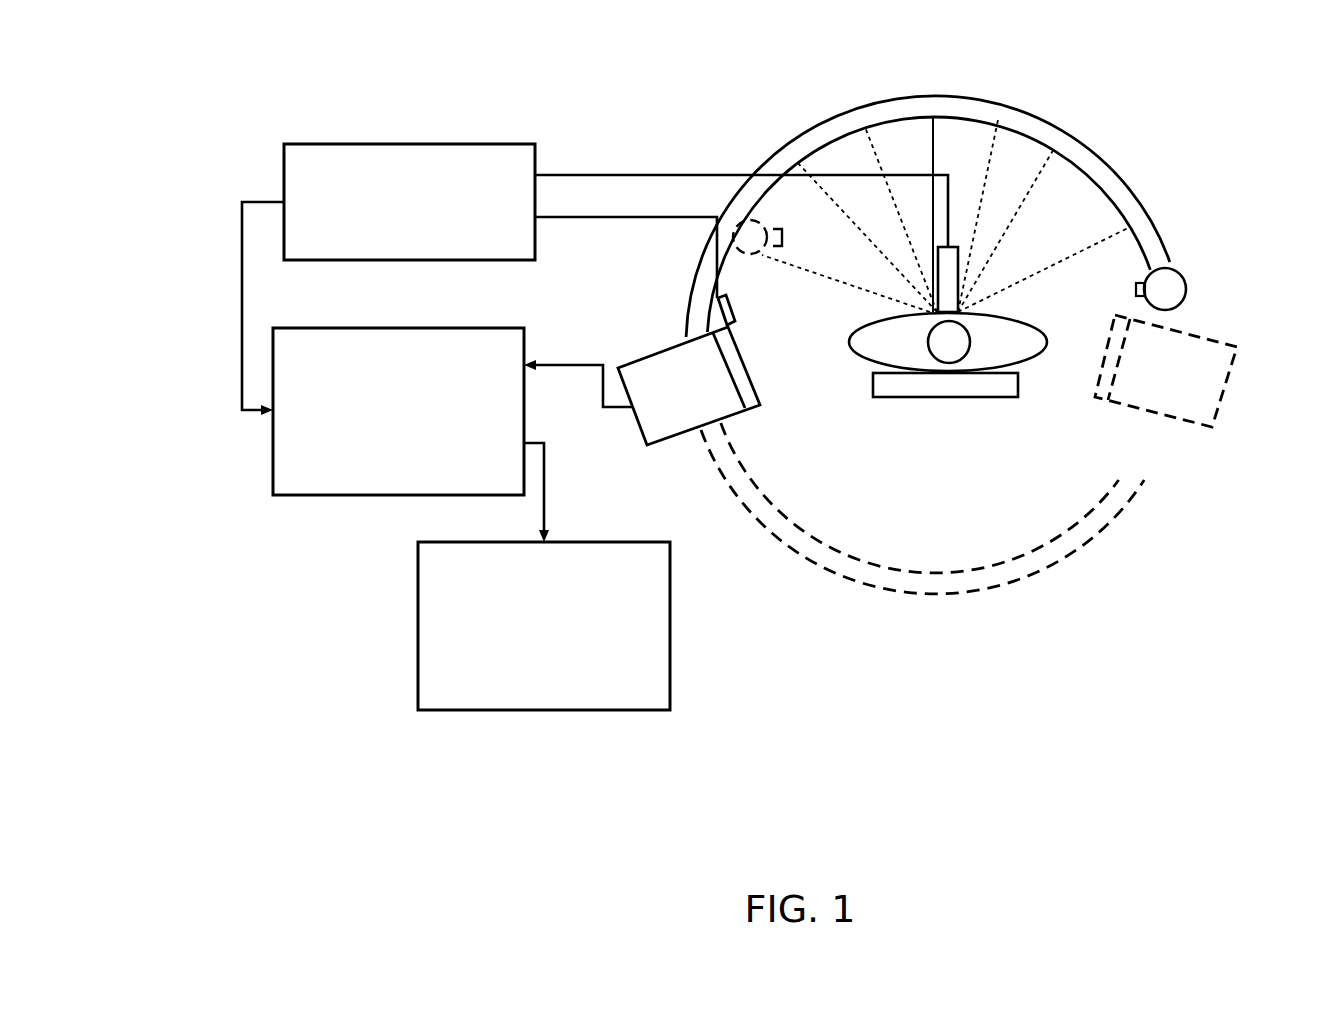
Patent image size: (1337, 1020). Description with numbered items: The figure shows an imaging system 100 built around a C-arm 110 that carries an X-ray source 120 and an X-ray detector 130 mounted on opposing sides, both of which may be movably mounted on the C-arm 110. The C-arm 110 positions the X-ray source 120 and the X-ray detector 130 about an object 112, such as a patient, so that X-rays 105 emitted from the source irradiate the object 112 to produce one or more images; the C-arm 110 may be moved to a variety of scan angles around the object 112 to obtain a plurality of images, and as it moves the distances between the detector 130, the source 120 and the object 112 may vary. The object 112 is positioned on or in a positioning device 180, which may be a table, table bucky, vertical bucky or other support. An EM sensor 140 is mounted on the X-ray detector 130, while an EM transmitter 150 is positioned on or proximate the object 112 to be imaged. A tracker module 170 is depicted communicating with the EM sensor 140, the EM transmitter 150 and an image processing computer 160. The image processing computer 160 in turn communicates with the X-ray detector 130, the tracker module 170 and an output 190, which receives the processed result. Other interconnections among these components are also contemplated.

The system 100 is at (437, 113).
The X-rays 105 is at (980, 212).
The C-arm 110 is at (978, 622).
The object 112 is at (850, 340).
The X-ray source 120 is at (1169, 262).
The X-ray detector 130 is at (712, 396).
The EM sensor 140 is at (732, 308).
The EM transmitter 150 is at (950, 245).
The image processing computer 160 is at (422, 457).
The tracker module 170 is at (432, 248).
The positioning device 180 is at (952, 397).
The output 190 is at (522, 673).